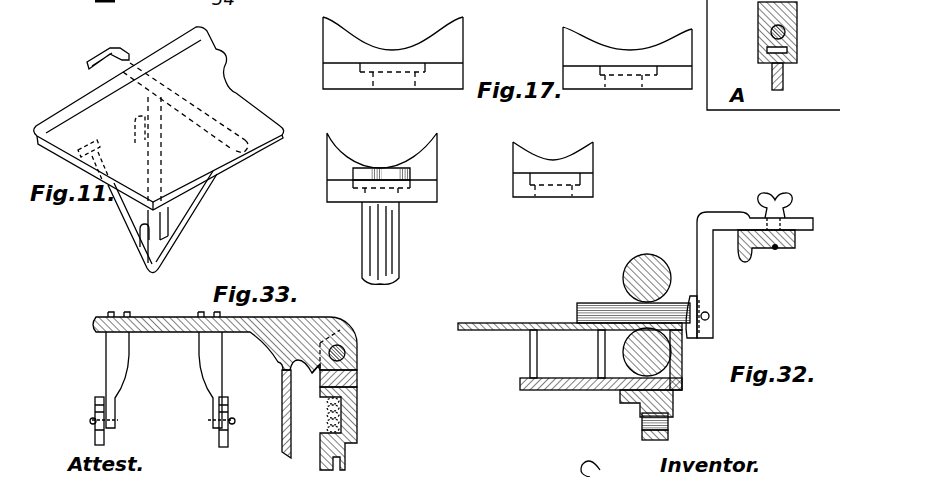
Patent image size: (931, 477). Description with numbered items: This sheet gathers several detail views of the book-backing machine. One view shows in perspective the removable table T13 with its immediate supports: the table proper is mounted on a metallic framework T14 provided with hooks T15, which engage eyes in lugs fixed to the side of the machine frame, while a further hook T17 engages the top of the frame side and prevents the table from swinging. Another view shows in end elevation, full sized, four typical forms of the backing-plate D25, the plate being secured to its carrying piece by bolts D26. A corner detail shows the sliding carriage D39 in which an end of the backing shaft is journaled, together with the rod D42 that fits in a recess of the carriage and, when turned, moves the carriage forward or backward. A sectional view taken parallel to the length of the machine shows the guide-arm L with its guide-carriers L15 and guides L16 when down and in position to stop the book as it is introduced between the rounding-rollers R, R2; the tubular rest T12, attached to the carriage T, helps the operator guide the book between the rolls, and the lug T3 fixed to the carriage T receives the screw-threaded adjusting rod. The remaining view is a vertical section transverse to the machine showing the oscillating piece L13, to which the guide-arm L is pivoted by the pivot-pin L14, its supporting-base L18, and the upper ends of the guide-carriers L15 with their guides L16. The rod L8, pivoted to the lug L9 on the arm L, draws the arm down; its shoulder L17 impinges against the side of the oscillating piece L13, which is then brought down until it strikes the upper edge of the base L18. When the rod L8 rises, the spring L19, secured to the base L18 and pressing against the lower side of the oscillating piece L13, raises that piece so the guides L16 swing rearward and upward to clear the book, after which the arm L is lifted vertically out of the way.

In FIG. 11, the table T13 is at (159, 118).
In FIG. 11, the hook T17 is at (105, 52).
In FIG. 11, the hooks T15 is at (146, 132).
In FIG. 11, the metallic framework T14 is at (163, 246).
In FIG. 17, the backing-plate D25 is at (421, 222).
In FIG. 17, the bolts D26 is at (379, 234).
In FIG. 17, the carriage D39 is at (797, 50).
In FIG. 17, the rod D42 is at (771, 27).
In FIG. 32, the guide-carriers L15 is at (706, 263).
In FIG. 33, the guide-carriers L15 is at (165, 380).
In FIG. 32, the guide-pieces L16 is at (700, 342).
In FIG. 33, the guide-pieces L16 is at (95, 403).
In FIG. 32, the guide-arm L is at (786, 247).
In FIG. 33, the guide-arm L is at (225, 342).
In FIG. 32, the rounding-roller R is at (647, 278).
In FIG. 32, the rounding-roller R2 is at (647, 352).
In FIG. 32, the tubular rest T12 is at (498, 315).
In FIG. 32, the lug T3 is at (640, 427).
In FIG. 33, the pivot-pin L14 is at (345, 352).
In FIG. 33, the oscillating piece L13 is at (357, 378).
In FIG. 33, the supporting-base L18 is at (357, 403).
In FIG. 33, the spring L19 is at (328, 417).
In FIG. 33, the shoulder L17 is at (313, 374).
In FIG. 33, the rod L8 is at (283, 445).
In FIG. 33, the lug L9 is at (285, 359).
In FIG. 33, the carriage T is at (350, 447).